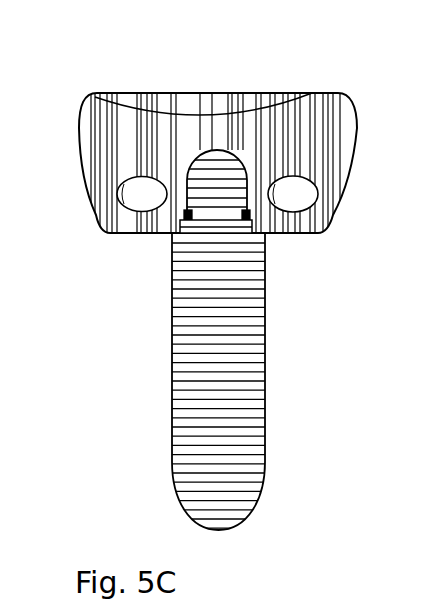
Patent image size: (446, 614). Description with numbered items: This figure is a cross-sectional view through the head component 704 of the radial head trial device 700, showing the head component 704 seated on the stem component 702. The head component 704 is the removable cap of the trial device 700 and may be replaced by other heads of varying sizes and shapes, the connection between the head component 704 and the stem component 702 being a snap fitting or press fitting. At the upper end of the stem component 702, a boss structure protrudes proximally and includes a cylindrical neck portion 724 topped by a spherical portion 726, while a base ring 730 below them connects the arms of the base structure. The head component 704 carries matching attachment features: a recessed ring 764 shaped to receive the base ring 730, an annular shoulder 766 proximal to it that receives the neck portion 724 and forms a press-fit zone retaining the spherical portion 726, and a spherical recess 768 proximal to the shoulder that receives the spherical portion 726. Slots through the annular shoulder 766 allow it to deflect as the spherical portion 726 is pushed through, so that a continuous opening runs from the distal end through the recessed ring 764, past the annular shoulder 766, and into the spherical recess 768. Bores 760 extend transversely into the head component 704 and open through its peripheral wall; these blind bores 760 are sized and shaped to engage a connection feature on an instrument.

The radial head trial device 700 is at (208, 56).
The stem component 702 is at (252, 362).
The head component 704 is at (303, 113).
The neck portion 724 is at (252, 218).
The spherical portion 726 is at (243, 170).
The base ring 730 is at (233, 206).
The bores 760 is at (120, 195).
The recessed ring 764 is at (180, 223).
The annular shoulder 766 is at (192, 213).
The spherical recess 768 is at (207, 153).